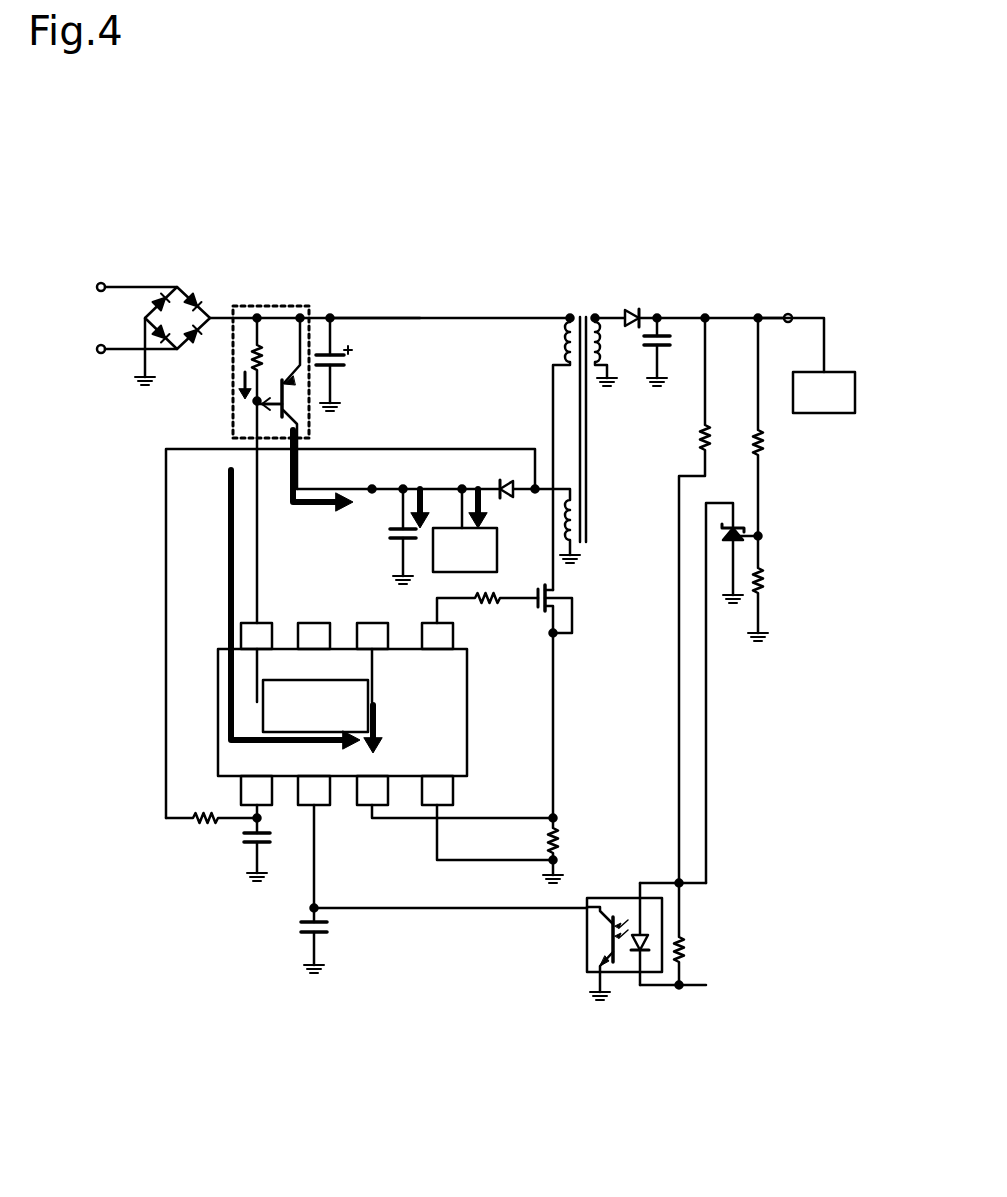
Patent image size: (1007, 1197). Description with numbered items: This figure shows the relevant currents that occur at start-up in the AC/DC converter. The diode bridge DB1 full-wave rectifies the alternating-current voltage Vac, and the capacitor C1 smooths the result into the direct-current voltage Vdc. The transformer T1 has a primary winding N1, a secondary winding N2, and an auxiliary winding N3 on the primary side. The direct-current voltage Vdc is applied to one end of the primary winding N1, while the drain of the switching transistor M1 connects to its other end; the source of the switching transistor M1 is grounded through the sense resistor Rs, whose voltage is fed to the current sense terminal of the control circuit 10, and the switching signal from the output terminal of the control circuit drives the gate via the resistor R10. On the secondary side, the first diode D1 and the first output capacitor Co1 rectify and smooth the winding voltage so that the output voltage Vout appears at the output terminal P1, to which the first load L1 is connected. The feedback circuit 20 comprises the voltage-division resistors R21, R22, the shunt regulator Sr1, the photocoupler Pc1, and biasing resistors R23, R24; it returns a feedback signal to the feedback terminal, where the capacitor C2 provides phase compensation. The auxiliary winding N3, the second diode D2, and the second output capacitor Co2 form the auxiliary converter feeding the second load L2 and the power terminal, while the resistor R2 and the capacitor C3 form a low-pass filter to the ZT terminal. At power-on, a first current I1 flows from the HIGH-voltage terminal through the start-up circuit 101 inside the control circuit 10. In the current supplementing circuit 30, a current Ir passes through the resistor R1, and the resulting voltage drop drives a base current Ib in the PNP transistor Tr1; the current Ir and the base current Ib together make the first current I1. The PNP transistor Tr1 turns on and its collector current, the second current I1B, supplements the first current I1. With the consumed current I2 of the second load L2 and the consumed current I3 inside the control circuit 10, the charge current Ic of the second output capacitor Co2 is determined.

The diode bridge DB1 is at (193, 290).
The alternating-current voltage Vac is at (83, 297).
The direct-current voltage Vdc is at (375, 304).
The resistor R1 is at (247, 358).
The current Ir is at (232, 385).
The PNP transistor Tr1 is at (309, 410).
The base current Ib is at (272, 421).
The current supplementing circuit 30 is at (233, 425).
The capacitor C1 is at (350, 366).
The transformer T1 is at (576, 416).
The primary winding N1 is at (572, 313).
The secondary winding N2 is at (597, 313).
The auxiliary winding N3 is at (574, 548).
The first diode D1 is at (634, 302).
The first output capacitor Co1 is at (662, 342).
The output terminal P1 is at (790, 312).
The output voltage Vout is at (780, 337).
The first load L1 is at (852, 372).
The resistor R23 is at (700, 440).
The voltage-division resistor R21 is at (763, 440).
The voltage-division resistor R22 is at (763, 578).
The shunt regulator Sr1 is at (734, 523).
The second diode D2 is at (504, 482).
The second output capacitor Co2 is at (392, 536).
The charge current Ic is at (426, 508).
The consumed current I2 is at (490, 508).
The second load L2 is at (497, 553).
The switching transistor M1 is at (560, 594).
The resistor R10 is at (487, 605).
The control circuit 10 is at (348, 714).
The start-up circuit 101 is at (262, 722).
The first current I1 is at (280, 609).
The second current I1B is at (321, 482).
The consumed current I3 is at (381, 729).
The resistor R2 is at (204, 816).
The capacitor C3 is at (243, 842).
The capacitor C2 is at (298, 931).
The sense resistor Rs is at (565, 843).
The photocoupler Pc1 is at (603, 897).
The resistor R24 is at (694, 950).
The feedback circuit 20 is at (782, 1003).